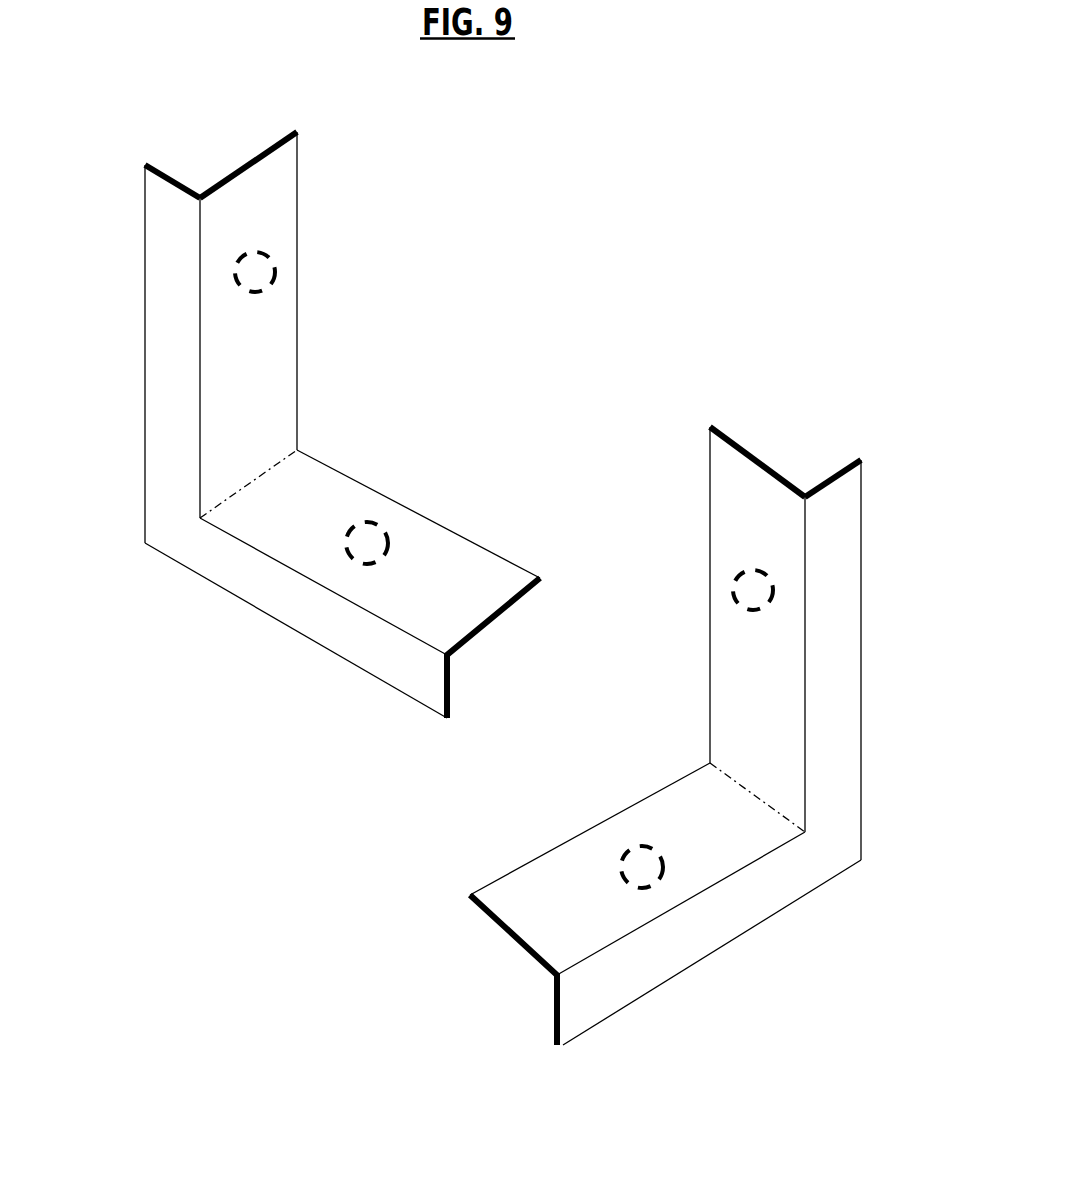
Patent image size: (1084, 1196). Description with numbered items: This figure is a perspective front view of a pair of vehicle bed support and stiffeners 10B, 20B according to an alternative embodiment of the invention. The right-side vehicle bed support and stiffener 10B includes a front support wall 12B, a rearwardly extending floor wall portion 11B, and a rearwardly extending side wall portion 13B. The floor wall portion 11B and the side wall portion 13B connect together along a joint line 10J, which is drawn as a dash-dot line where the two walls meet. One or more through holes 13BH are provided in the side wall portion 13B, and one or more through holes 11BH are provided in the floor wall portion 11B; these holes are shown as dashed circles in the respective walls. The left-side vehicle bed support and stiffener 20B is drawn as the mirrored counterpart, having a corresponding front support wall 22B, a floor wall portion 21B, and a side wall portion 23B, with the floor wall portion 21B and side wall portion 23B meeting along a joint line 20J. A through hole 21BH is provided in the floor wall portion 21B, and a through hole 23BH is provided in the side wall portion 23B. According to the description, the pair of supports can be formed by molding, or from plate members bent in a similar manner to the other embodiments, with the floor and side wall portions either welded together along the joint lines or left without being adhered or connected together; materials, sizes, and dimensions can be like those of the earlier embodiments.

The right-side vehicle bed support and stiffener 10B is at (681, 471).
The joint line 10J is at (753, 790).
The rearwardly extending floor wall portion 11B is at (702, 818).
The through hole 11BH is at (657, 880).
The front support wall 12B is at (817, 857).
The rearwardly extending side wall portion 13B is at (718, 540).
The through hole 13BH is at (775, 590).
The vehicle bed support and stiffener 20B is at (376, 323).
The joint line 20J is at (263, 470).
The floor wall portion 21B is at (273, 508).
The through hole 21BH is at (345, 545).
The front support wall 22B is at (173, 262).
The side wall portion 23B is at (270, 415).
The through hole 23BH is at (233, 270).